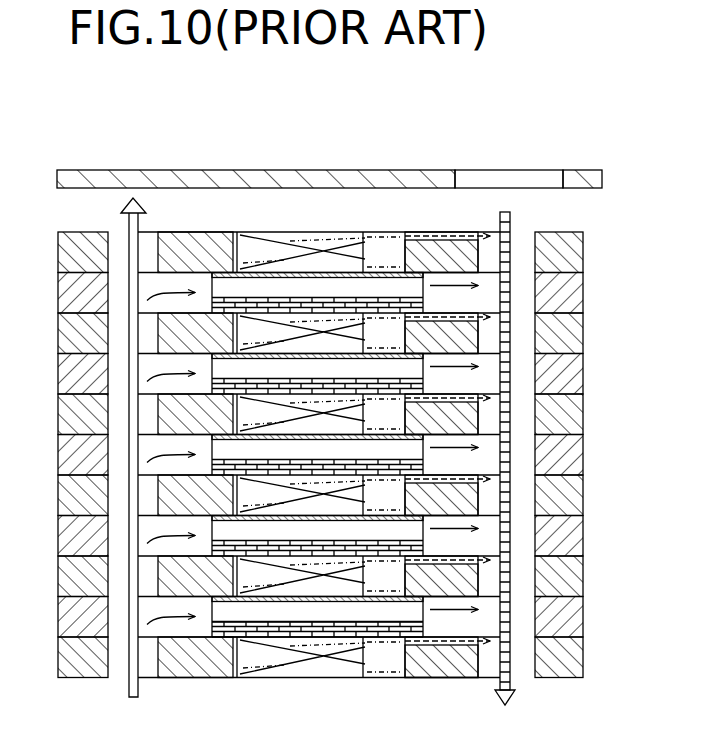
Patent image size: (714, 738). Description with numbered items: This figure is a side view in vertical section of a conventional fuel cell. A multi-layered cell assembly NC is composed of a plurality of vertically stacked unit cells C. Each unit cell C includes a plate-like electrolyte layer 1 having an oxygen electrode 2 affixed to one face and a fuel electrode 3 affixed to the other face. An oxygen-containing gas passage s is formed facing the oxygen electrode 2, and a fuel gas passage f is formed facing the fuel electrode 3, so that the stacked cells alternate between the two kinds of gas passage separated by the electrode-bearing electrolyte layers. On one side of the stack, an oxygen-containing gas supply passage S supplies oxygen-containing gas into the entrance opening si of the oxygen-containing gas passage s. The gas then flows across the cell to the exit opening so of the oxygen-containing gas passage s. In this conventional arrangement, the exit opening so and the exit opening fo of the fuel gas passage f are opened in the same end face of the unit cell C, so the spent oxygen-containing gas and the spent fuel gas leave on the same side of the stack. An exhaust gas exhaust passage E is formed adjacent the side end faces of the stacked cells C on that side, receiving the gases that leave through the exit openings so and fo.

The multi-layered cell assembly NC is at (303, 214).
The oxygen-containing gas supply passage S is at (127, 203).
The exhaust gas exhaust passage E is at (511, 212).
The entrance opening of the oxygen-containing gas passage si is at (214, 318).
The exit opening of the oxygen-containing gas passage so is at (425, 292).
The fuel gas passage f is at (282, 412).
The exit opening of the fuel gas passage fo is at (432, 316).
The oxygen-containing gas passage s is at (313, 325).
The unit cell C is at (298, 540).
The electrolyte layer 1 is at (397, 627).
The oxygen electrode 2 is at (418, 660).
The fuel electrode 3 is at (362, 640).